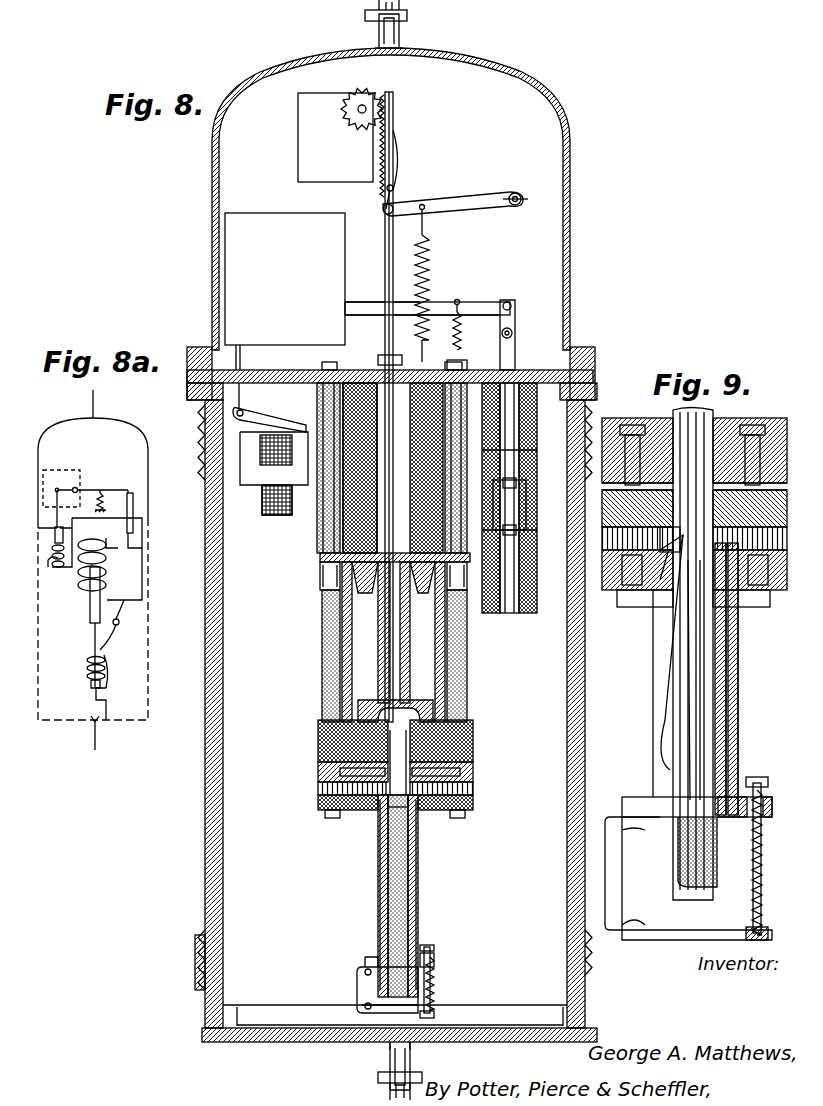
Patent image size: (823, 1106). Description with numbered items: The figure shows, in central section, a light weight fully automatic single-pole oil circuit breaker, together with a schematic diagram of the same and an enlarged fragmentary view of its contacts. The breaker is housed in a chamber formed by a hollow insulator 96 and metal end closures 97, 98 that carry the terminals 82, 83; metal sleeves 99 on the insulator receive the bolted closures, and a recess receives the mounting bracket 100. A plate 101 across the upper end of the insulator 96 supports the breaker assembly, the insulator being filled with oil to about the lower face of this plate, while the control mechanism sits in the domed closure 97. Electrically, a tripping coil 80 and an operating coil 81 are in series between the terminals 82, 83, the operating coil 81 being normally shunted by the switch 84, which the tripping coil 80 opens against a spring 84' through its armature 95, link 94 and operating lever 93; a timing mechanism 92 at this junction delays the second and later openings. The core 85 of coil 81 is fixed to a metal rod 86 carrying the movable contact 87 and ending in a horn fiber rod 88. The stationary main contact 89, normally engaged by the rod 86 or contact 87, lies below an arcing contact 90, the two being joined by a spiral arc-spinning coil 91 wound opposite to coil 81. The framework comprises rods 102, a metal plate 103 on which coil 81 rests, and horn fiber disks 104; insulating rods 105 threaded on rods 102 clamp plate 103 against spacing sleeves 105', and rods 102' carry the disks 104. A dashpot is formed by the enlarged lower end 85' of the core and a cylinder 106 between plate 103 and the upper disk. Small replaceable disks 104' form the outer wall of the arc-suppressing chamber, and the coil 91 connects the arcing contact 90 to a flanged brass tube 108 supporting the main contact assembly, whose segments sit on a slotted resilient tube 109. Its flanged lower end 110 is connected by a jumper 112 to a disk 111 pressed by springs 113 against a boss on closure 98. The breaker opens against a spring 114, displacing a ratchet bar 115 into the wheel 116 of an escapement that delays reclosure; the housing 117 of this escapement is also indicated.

In FIG. 8, the tripping coil 80 is at (258, 516).
In FIG. 8A, the tripping coil 80 is at (55, 568).
In FIG. 8, the operating coil 81 is at (362, 392).
In FIG. 8A, the operating coil 81 is at (106, 547).
In FIG. 8, the terminal 82 is at (400, 31).
In FIG. 8A, the terminal 82 is at (92, 399).
In FIG. 8, the terminal 83 is at (390, 1062).
In FIG. 8A, the terminal 83 is at (94, 740).
In FIG. 8, the switch 84 is at (520, 498).
In FIG. 8A, the switch 84 is at (150, 516).
In FIG. 8, the spring 84' is at (468, 335).
In FIG. 8, the core 85 is at (345, 632).
In FIG. 8A, the core 85 is at (81, 627).
In FIG. 8, the enlarged lower end 85' is at (432, 696).
In FIG. 8, the metal rod 86 is at (385, 272).
In FIG. 9, the metal rod 86 is at (715, 412).
In FIG. 8, the movable contact 87 is at (392, 812).
In FIG. 8A, the movable contact 87 is at (92, 686).
In FIG. 8, the rod 88 is at (390, 896).
In FIG. 9, the rod 88 is at (730, 666).
In FIG. 8, the main contact 89 is at (384, 800).
In FIG. 8A, the main contact 89 is at (110, 690).
In FIG. 9, the main contact 89 is at (655, 560).
In FIG. 8A, the arcing contact 90 is at (102, 648).
In FIG. 9, the arcing contact 90 is at (670, 527).
In FIG. 8, the spiral coil 91 is at (470, 786).
In FIG. 8A, the spiral coil 91 is at (87, 664).
In FIG. 9, the spiral coil 91 is at (790, 540).
In FIG. 8, the timing mechanism 92 is at (236, 304).
In FIG. 8A, the timing mechanism 92 is at (43, 491).
In FIG. 8, the operating lever 93 is at (486, 303).
In FIG. 8A, the operating lever 93 is at (97, 490).
In FIG. 8, the link 94 is at (246, 362).
In FIG. 8A, the link 94 is at (55, 528).
In FIG. 8, the armature 95 is at (269, 420).
In FIG. 8, the hollow insulator 96 is at (585, 636).
In FIG. 8, the end closure 97 is at (572, 224).
In FIG. 8, the end closure 98 is at (500, 1040).
In FIG. 8, the metal sleeves 99 is at (204, 946).
In FIG. 8, the mounting bracket 100 is at (204, 772).
In FIG. 8, the plate 101 is at (537, 370).
In FIG. 8, the rods 102 is at (372, 581).
In FIG. 8, the rods 102' is at (404, 830).
In FIG. 8, the metal plate 103 is at (320, 568).
In FIG. 8, the horn fiber disks 104 is at (367, 765).
In FIG. 8, the small horn fiber disks 104' is at (435, 757).
In FIG. 9, the small horn fiber disks 104' is at (704, 457).
In FIG. 8, the insulating rods 105 is at (400, 552).
In FIG. 8, the spacing sleeves 105' is at (327, 468).
In FIG. 8, the cylinder 106 is at (344, 674).
In FIG. 8, the flanged brass tube 108 is at (418, 874).
In FIG. 9, the flanged brass tube 108 is at (655, 722).
In FIG. 8, the slotted tube 109 is at (418, 902).
In FIG. 9, the slotted tube 109 is at (685, 660).
In FIG. 8, the flanged lower end 110 is at (434, 960).
In FIG. 9, the flanged lower end 110 is at (638, 803).
In FIG. 8, the disk 111 is at (434, 1014).
In FIG. 9, the disk 111 is at (748, 938).
In FIG. 8, the jumper 112 is at (357, 988).
In FIG. 9, the jumper 112 is at (609, 872).
In FIG. 8, the springs 113 is at (436, 978).
In FIG. 9, the springs 113 is at (765, 846).
In FIG. 8, the spring 114 is at (432, 258).
In FIG. 8, the ratchet bar 115 is at (397, 151).
In FIG. 8, the wheel 116 is at (356, 124).
In FIG. 8, the gear housing 117 is at (301, 146).